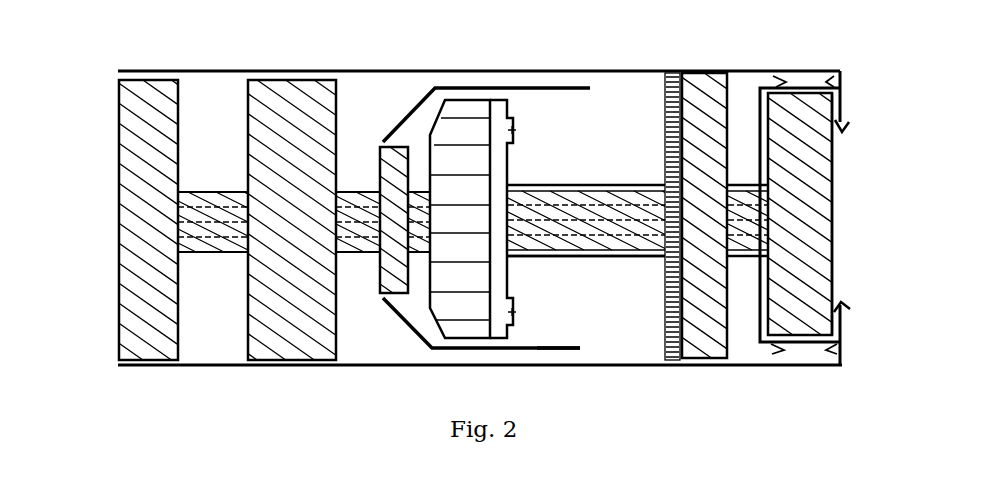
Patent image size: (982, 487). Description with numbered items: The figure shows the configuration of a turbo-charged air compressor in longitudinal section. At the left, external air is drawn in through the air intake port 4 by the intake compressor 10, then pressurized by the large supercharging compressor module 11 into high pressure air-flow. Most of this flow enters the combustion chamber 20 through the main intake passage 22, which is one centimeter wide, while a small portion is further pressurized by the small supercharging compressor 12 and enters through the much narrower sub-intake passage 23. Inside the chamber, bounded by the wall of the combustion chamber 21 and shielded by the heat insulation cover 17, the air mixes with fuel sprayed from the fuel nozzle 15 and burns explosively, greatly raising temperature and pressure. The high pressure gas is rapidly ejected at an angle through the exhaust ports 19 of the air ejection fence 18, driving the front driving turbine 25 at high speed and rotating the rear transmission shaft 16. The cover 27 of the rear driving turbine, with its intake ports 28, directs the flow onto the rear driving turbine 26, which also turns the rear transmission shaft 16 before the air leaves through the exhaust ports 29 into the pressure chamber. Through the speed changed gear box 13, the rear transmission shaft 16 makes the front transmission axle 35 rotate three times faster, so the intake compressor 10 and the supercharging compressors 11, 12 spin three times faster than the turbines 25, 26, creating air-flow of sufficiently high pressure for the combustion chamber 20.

The air intake port 4 is at (118, 190).
The intake compressor 10 is at (138, 103).
The large supercharging compressor module 11 is at (285, 128).
The small supercharging compressor 12 is at (395, 267).
The speed changed gear box 13 is at (470, 272).
The fuel nozzle 15 is at (512, 130).
The rear transmission shaft 16 is at (603, 207).
The heat insulation cover for resisting high temperature 17 is at (558, 258).
The air ejection fence 18 is at (673, 292).
The exhaust port of the air ejection fence 19 is at (675, 318).
The combustion chamber 20 is at (588, 124).
The wall of the combustion chamber 21 is at (537, 347).
The main intake passage 22 is at (448, 80).
The sub-intake passage 23 is at (497, 100).
The front driving turbine 25 is at (720, 328).
The rear driving turbine 26 is at (803, 227).
The cover of the rear driving turbine 27 is at (760, 88).
The intake port of the cover of the rear driving turbine 28 is at (805, 85).
The exhaust port of the rear driving turbine 29 is at (832, 213).
The front transmission axle 35 is at (233, 225).